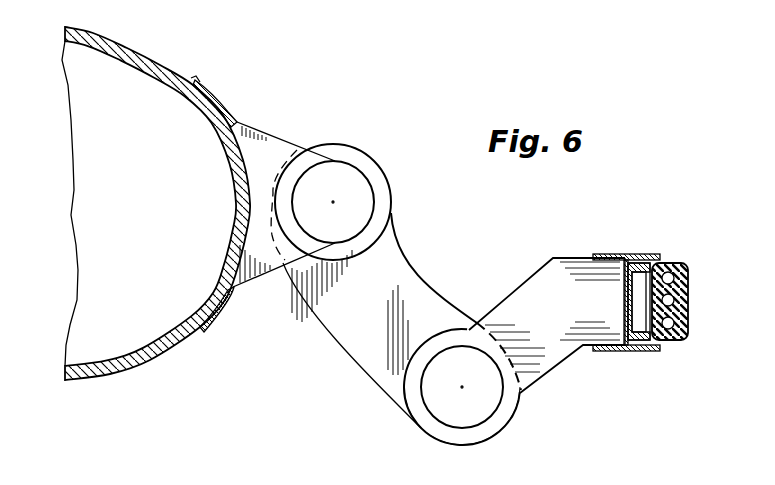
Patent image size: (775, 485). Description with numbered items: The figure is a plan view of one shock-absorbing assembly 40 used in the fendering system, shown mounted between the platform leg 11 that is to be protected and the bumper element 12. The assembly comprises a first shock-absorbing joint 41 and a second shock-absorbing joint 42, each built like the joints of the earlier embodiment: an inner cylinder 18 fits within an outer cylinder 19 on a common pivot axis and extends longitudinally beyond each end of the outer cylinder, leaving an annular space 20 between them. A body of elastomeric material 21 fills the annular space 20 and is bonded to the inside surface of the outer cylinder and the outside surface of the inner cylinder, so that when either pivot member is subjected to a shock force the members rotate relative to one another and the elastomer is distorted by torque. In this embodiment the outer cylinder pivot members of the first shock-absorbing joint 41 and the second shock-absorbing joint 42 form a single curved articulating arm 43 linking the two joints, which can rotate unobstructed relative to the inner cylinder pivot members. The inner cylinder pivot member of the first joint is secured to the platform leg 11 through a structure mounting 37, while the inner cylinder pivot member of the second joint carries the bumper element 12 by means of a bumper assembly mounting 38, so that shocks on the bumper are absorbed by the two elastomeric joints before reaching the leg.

The platform leg 11 is at (147, 362).
The bumper element 12 is at (690, 292).
The inner cylinder 18 is at (390, 193).
The outer cylinder 19 is at (392, 212).
The annular space 20 is at (317, 258).
The body of elastomeric material 21 is at (493, 433).
The structure mounting 37 is at (227, 113).
The bumper assembly mounting 38 is at (625, 257).
The shock-absorbing assembly 40 is at (418, 178).
The first shock-absorbing joint 41 is at (331, 146).
The second shock-absorbing joint 42 is at (522, 403).
The curved articulating arm 43 is at (432, 276).